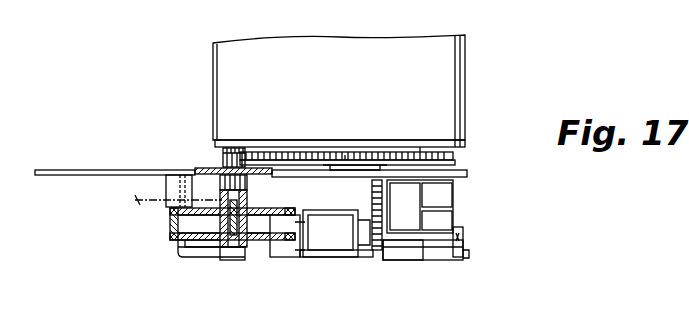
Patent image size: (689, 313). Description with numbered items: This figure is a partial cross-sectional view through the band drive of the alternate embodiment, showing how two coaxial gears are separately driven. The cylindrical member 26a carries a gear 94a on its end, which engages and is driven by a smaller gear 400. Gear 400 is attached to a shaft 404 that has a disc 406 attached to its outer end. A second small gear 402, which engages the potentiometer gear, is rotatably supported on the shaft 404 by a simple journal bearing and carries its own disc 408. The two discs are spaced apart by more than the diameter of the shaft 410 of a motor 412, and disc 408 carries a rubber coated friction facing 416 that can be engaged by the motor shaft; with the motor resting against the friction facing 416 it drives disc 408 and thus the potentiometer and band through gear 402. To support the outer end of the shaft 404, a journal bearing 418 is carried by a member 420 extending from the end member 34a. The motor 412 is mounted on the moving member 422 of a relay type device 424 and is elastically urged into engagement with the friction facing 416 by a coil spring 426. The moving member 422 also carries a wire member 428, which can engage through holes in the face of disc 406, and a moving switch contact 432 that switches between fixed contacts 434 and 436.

The cylinder 26a is at (455, 92).
The gear 94a is at (455, 158).
The end member 34a is at (70, 170).
The smaller gear 400 is at (222, 156).
The second small gear 402 is at (247, 187).
The shaft 404 is at (222, 195).
The disc 406 is at (215, 248).
The disc 408 is at (170, 200).
The motor shaft 410 is at (288, 257).
The motor 412 is at (170, 237).
The friction facing 416 is at (170, 212).
The journal bearing 418 is at (232, 260).
The member 420 is at (185, 257).
The moving member 422 is at (400, 262).
The relay type device 424 is at (440, 213).
The coil spring 426 is at (372, 190).
The wire member 428 is at (322, 258).
The moving switch contact 432 is at (425, 260).
The fixed contact 434 is at (468, 255).
The fixed contact 436 is at (463, 240).